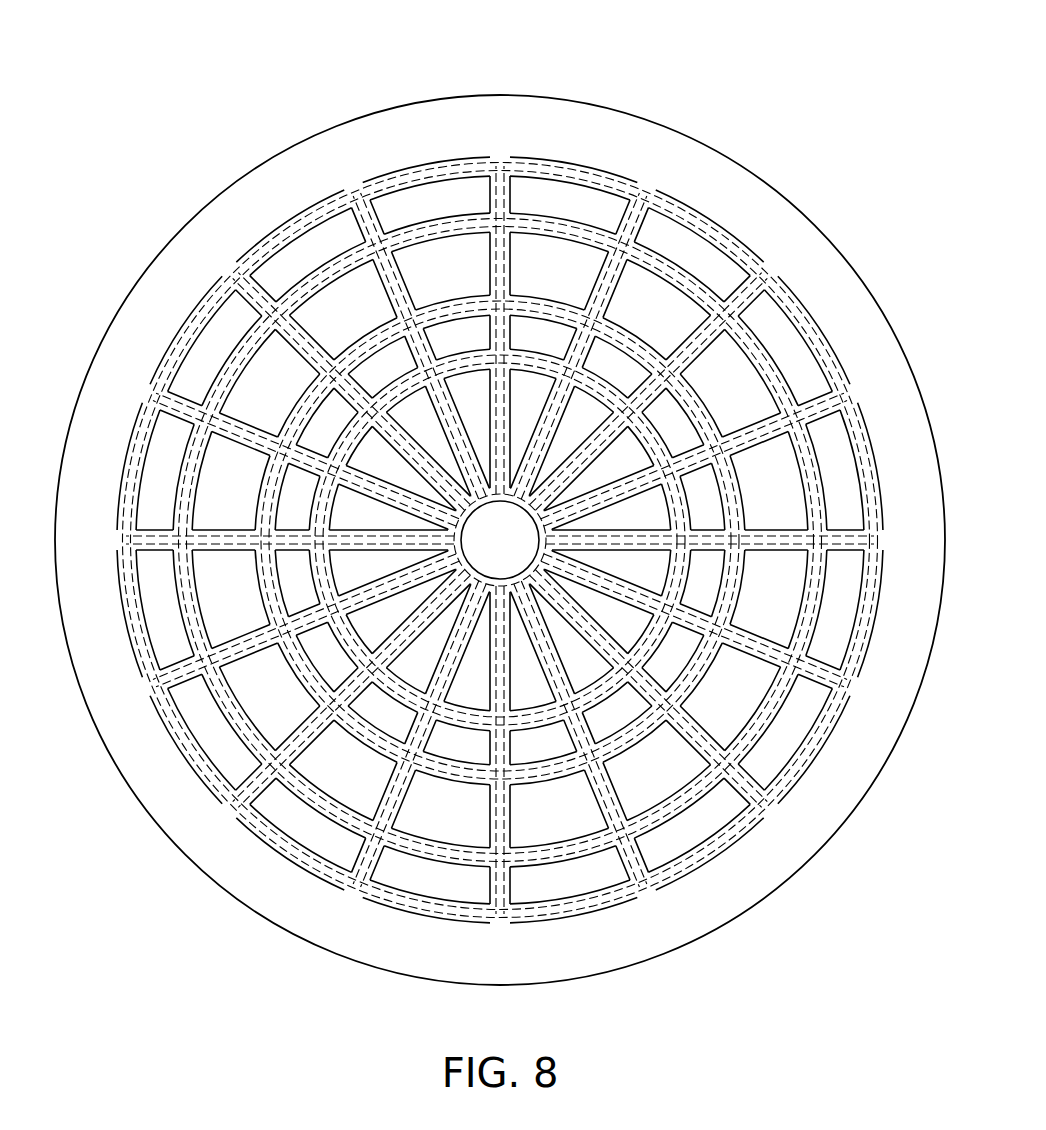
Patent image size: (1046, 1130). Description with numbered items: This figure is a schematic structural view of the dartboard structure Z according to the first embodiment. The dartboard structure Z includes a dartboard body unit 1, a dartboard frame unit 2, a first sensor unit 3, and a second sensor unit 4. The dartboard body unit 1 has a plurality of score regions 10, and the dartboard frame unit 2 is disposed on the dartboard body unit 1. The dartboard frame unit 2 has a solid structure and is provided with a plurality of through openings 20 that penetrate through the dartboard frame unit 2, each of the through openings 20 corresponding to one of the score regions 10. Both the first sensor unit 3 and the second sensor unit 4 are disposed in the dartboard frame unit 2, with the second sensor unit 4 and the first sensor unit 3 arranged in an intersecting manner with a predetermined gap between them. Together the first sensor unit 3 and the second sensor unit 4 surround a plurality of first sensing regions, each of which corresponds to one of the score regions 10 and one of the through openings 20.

The dartboard structure Z is at (212, 104).
The dartboard body unit 1 is at (660, 147).
The dartboard frame unit 2 is at (783, 282).
The first sensor unit 3 is at (663, 267).
The second sensor unit 4 is at (383, 210).
The score regions 10 is at (792, 348).
The through openings 20 is at (513, 497).